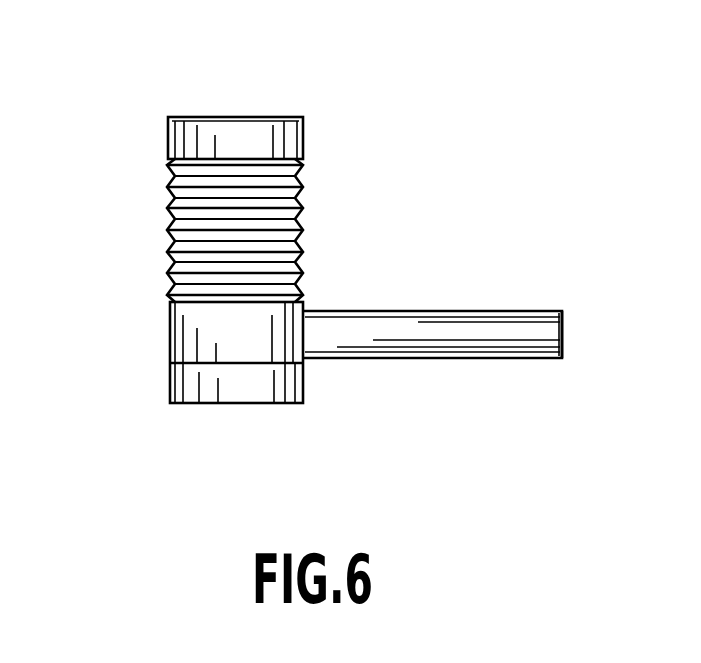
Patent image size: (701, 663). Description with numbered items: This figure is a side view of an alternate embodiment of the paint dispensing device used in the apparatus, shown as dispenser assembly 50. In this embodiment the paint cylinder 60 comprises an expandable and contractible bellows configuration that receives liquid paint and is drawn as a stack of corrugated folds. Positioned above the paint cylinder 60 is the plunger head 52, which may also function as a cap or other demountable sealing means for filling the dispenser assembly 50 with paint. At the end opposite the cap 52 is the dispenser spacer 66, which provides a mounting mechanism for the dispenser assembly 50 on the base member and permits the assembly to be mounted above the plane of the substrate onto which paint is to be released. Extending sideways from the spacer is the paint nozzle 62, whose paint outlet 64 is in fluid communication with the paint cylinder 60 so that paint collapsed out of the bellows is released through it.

The dispenser assembly 50 is at (366, 204).
The plunger head 52 is at (229, 117).
The paint cylinder 60 is at (343, 185).
The paint nozzle 62 is at (413, 311).
The paint outlet 64 is at (562, 327).
The dispenser spacer 66 is at (170, 383).